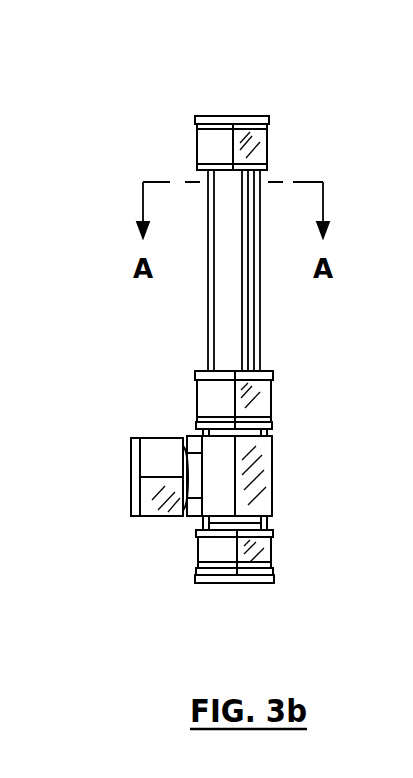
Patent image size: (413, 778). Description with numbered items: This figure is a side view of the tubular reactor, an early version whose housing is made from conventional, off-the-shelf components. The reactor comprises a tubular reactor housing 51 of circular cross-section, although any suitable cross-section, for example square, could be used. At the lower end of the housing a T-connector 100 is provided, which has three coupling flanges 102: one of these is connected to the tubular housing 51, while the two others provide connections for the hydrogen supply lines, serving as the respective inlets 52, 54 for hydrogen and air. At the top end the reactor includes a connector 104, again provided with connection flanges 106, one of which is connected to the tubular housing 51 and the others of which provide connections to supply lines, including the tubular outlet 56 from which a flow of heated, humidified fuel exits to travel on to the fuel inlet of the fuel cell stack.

The tubular reactor housing 51 is at (247, 320).
The inlet 52 is at (131, 468).
The inlet 54 is at (275, 545).
The tubular outlet 56 is at (228, 116).
The T-connector 100 is at (274, 462).
The coupling flange 102 is at (204, 372).
The connector 104 is at (203, 150).
The connection flange 106 is at (272, 125).